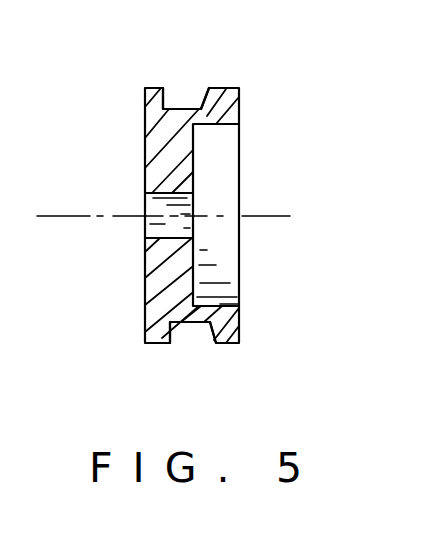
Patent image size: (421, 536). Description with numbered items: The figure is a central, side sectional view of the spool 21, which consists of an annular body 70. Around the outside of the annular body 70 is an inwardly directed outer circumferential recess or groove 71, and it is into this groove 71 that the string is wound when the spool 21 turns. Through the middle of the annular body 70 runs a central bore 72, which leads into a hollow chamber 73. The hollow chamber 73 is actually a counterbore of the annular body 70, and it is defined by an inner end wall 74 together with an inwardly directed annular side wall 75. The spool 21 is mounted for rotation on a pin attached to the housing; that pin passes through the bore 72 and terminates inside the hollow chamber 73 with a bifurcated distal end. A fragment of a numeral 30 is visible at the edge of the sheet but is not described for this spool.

The spool 21 is at (244, 100).
The annular body 70 is at (240, 329).
The outer circumferential recess/groove 71 is at (180, 109).
The central bore 72 is at (157, 211).
The hollow chamber 73 is at (224, 182).
The inner end wall 74 is at (195, 273).
The annular side wall 75 is at (226, 301).
The adjacent part 30 is at (19, 18).